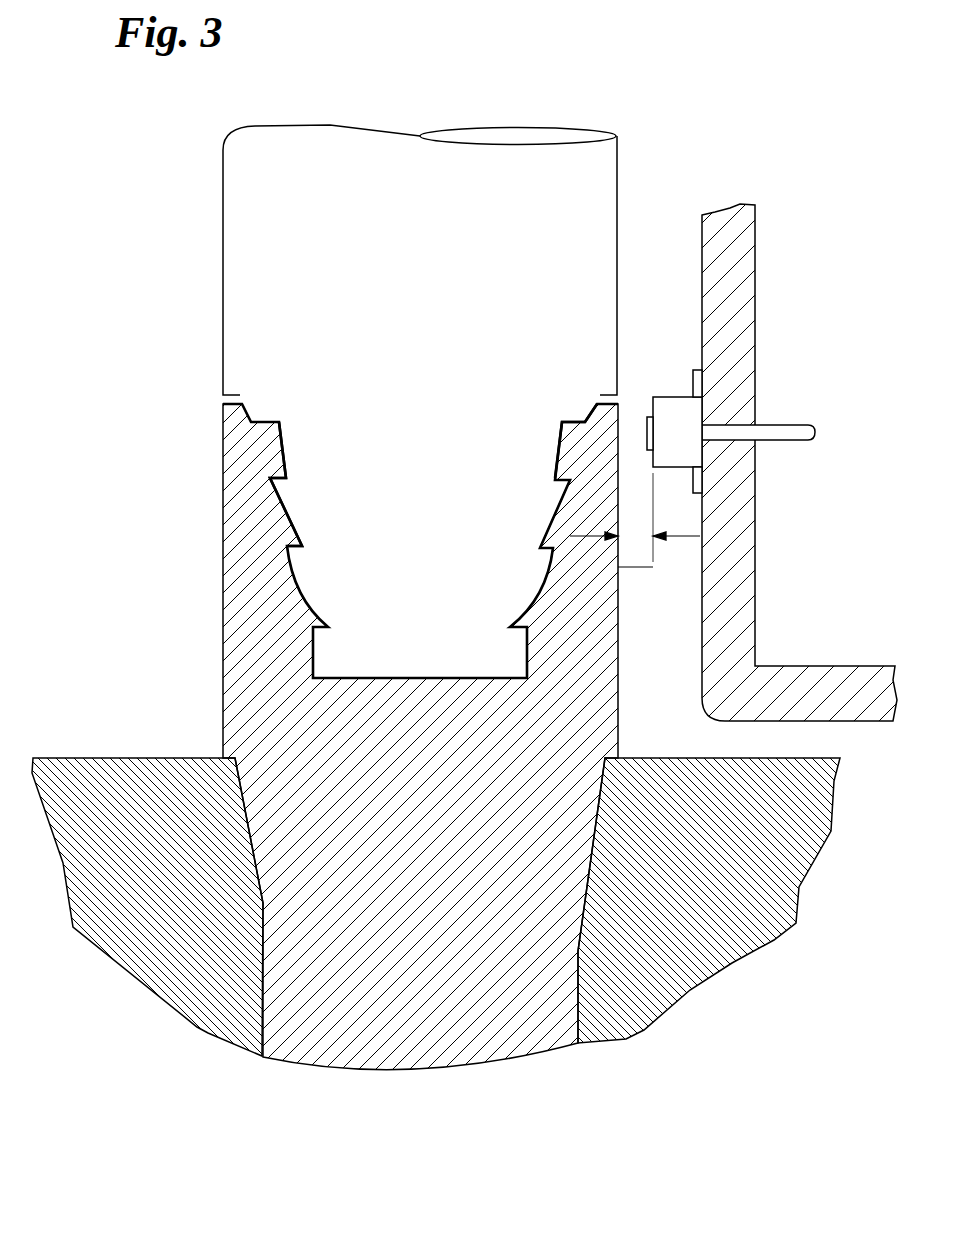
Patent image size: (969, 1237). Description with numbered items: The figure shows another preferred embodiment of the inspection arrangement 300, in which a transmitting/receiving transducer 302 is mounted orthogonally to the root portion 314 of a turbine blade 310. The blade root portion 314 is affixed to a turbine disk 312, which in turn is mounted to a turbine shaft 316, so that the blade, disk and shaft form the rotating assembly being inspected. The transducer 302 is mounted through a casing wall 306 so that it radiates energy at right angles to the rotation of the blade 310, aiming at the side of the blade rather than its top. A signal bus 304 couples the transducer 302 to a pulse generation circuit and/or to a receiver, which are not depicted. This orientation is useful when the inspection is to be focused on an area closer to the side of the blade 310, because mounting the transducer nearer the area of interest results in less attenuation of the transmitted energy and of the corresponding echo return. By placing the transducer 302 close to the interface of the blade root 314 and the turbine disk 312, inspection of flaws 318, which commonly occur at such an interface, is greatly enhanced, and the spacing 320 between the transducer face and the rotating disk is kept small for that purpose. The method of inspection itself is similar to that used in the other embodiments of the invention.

The sealing assembly 300 is at (468, 97).
The transmitting/receiving transducer 302 is at (677, 420).
The signal bus 304 is at (797, 432).
The casing wall 306 is at (757, 510).
The turbine blade 310 is at (240, 173).
The turbine disk 312 is at (230, 598).
The root portion 314 is at (303, 513).
The turbine shaft 316 is at (147, 758).
The flaws 318 is at (583, 413).
The gap 320 is at (633, 568).